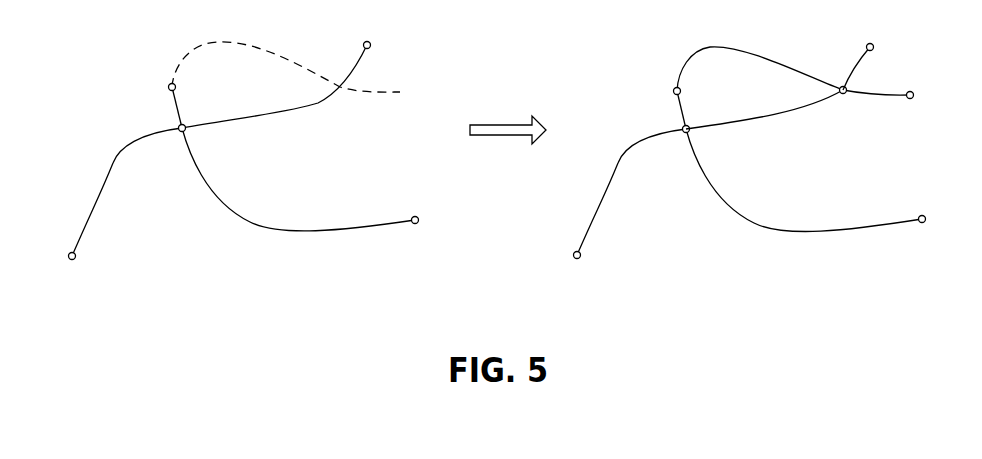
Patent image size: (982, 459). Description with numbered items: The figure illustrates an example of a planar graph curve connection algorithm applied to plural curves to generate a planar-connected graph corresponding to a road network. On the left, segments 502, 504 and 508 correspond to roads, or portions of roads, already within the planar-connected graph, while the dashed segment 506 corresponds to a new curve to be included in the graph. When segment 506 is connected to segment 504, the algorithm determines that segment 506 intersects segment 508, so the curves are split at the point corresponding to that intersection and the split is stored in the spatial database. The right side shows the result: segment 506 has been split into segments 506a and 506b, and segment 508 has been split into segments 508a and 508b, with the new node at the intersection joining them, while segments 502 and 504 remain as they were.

The segment 502 is at (100, 181).
The segment 504 is at (316, 258).
The segment 506 is at (226, 40).
The segment 508 is at (295, 146).
The segment 506a is at (733, 43).
The segment 506b is at (923, 123).
The segment 508a is at (808, 146).
The segment 508b is at (864, 53).